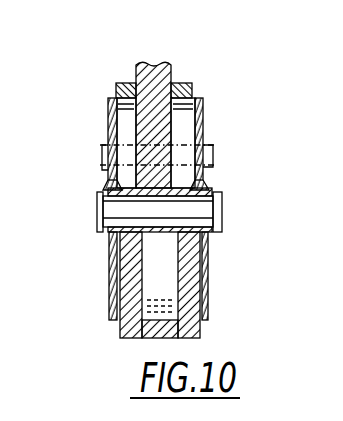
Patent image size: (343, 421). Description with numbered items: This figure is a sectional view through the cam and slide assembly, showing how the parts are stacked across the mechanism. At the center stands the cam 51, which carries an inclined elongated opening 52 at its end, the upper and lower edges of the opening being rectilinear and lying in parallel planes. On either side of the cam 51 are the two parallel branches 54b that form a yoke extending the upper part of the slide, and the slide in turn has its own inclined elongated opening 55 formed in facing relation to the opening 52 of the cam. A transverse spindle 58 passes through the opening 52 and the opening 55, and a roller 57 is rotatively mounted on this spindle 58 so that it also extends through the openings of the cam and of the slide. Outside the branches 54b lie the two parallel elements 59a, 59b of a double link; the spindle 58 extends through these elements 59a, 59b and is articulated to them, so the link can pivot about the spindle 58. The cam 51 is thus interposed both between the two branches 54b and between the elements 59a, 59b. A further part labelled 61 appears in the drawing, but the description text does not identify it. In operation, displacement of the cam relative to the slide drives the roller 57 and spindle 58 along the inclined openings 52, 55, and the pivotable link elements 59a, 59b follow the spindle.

The cam 51 is at (164, 63).
The elongated opening 52 is at (167, 284).
The parallel branches 54b is at (121, 83).
The elongated opening 55 is at (118, 136).
The roller 57 is at (113, 185).
The transverse spindle 58 is at (107, 232).
The link element 59a is at (108, 100).
The link element 59b is at (204, 120).
The bracket 61 is at (214, 155).